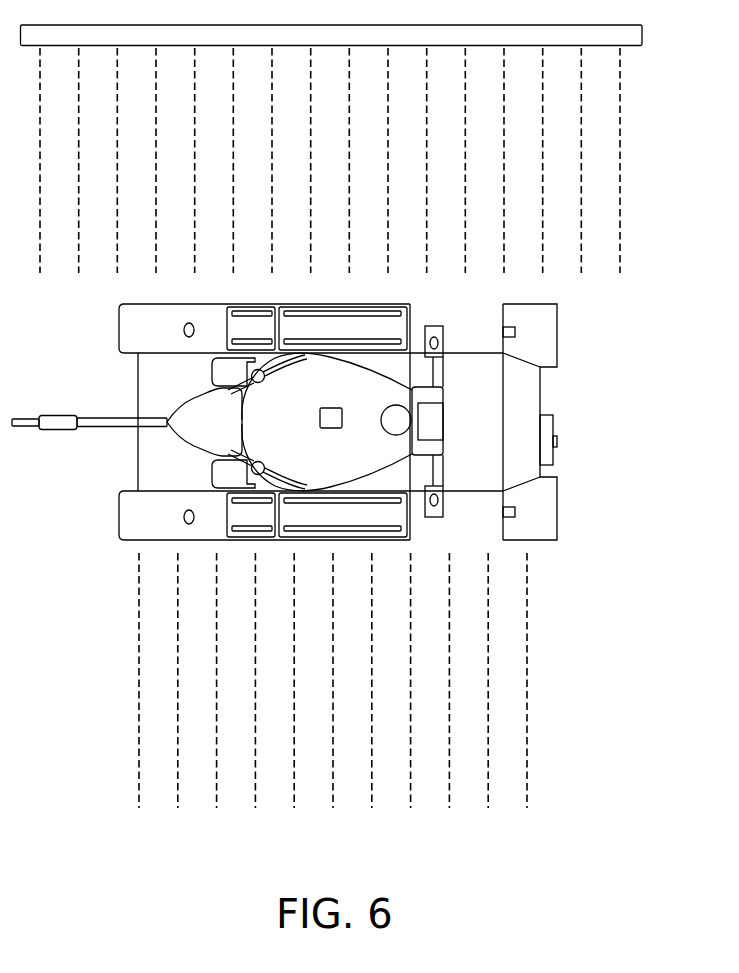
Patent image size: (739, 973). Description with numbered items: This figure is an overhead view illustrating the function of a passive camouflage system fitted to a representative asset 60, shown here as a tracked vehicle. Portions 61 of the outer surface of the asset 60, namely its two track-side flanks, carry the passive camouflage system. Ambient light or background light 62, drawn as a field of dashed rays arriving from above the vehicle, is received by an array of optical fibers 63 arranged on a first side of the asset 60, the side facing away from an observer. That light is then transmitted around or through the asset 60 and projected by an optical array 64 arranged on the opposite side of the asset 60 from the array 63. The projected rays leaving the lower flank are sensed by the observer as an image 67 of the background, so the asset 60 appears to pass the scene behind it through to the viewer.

The asset 60 is at (334, 420).
The portions of outer surface 61 is at (388, 420).
The ambient light or background light 62 is at (639, 181).
The array of optical fibers 63 is at (492, 304).
The optical array 64 is at (480, 540).
The image 67 is at (532, 700).